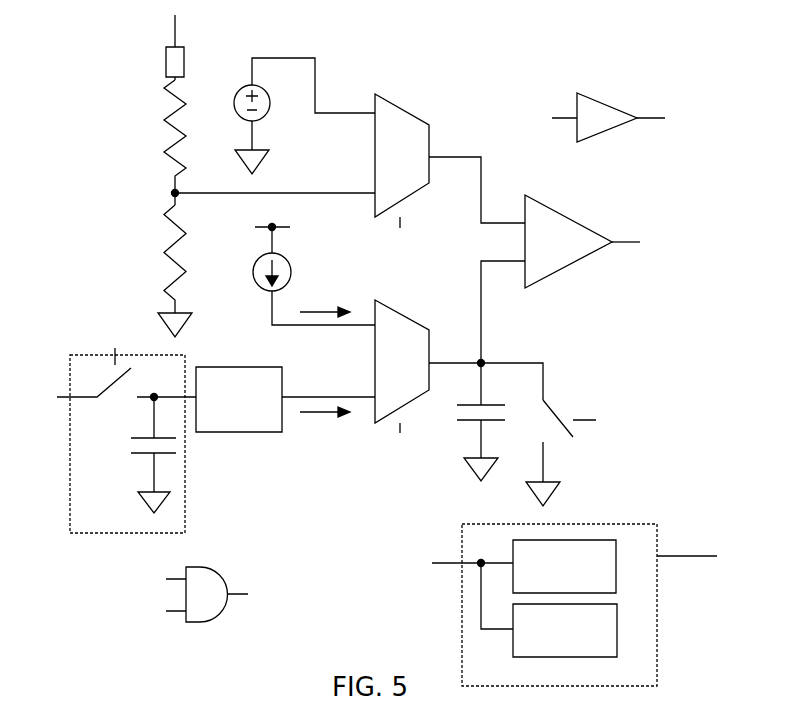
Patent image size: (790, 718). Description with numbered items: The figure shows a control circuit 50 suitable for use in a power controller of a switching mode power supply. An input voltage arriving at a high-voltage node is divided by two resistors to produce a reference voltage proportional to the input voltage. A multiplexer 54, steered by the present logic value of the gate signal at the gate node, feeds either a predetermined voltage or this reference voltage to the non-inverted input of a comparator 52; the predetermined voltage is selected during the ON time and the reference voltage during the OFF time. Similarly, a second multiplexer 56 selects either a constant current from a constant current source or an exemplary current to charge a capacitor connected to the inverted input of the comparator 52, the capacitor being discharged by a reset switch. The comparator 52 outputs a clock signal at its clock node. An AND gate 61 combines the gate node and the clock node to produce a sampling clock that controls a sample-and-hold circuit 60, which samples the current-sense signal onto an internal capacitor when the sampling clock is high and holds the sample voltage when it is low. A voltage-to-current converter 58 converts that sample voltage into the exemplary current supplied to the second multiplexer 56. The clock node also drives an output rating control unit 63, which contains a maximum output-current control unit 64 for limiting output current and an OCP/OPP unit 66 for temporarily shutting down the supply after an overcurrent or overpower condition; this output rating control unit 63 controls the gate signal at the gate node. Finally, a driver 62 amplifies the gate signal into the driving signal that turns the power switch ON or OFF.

The control circuit 50 is at (527, 67).
The comparator 52 is at (565, 265).
The multiplexer 54 is at (412, 180).
The multiplexer 56 is at (412, 386).
The voltage-to-current converter 58 is at (229, 419).
The sample-and-hold circuit 60 is at (106, 520).
The AND gate 61 is at (212, 601).
The driver 62 is at (604, 126).
The output rating control unit 63 is at (501, 675).
The maximum output-current control unit 64 is at (590, 576).
The OCP/OPP unit 66 is at (553, 650).